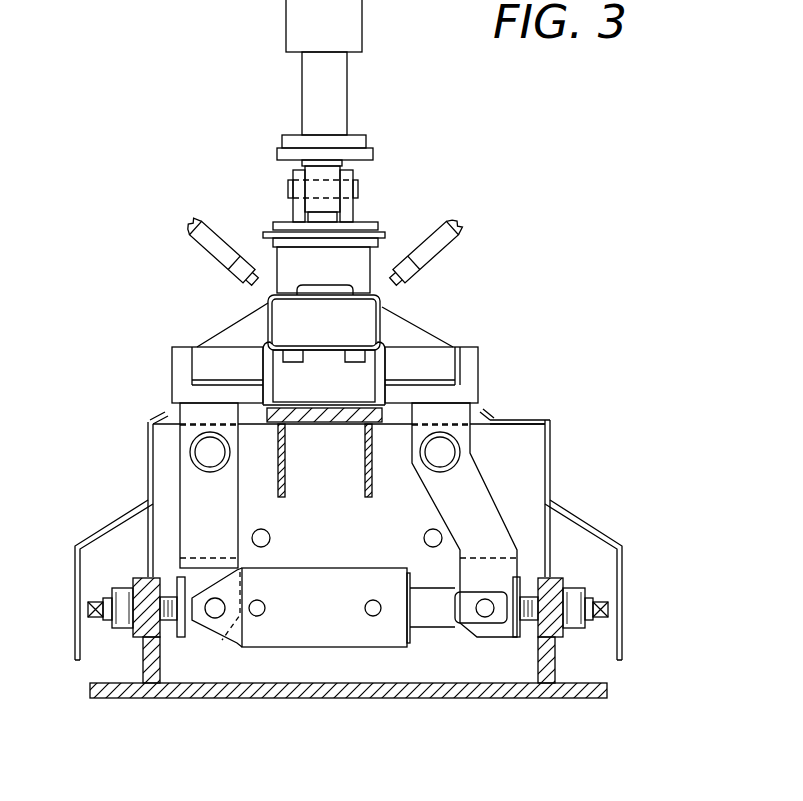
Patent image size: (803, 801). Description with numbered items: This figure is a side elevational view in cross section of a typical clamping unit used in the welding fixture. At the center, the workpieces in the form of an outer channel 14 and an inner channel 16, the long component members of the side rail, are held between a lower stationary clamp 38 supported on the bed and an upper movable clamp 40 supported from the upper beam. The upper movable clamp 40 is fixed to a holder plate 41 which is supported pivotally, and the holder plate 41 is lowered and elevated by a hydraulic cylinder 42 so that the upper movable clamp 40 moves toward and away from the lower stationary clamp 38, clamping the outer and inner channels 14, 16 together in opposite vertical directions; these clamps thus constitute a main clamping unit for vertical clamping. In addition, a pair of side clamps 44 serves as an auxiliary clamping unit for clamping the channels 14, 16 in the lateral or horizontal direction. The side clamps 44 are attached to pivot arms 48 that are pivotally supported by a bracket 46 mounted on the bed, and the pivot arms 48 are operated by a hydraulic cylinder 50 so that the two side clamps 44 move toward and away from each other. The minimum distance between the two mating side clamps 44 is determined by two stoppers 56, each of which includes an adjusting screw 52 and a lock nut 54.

The outer channel 14 is at (268, 340).
The inner channel 16 is at (343, 296).
The lower stationary clamp 38 is at (375, 375).
The upper movable clamp 40 is at (367, 263).
The holder plate 41 is at (366, 228).
The hydraulic cylinder 42 is at (356, 17).
The side clamp 44 is at (212, 347).
The bracket 46 is at (535, 464).
The pivot arm 48 is at (235, 517).
The hydraulic cylinder 50 is at (313, 577).
The adjusting screw 52 is at (164, 621).
The lock nut 54 is at (123, 624).
The stopper 56 is at (118, 578).